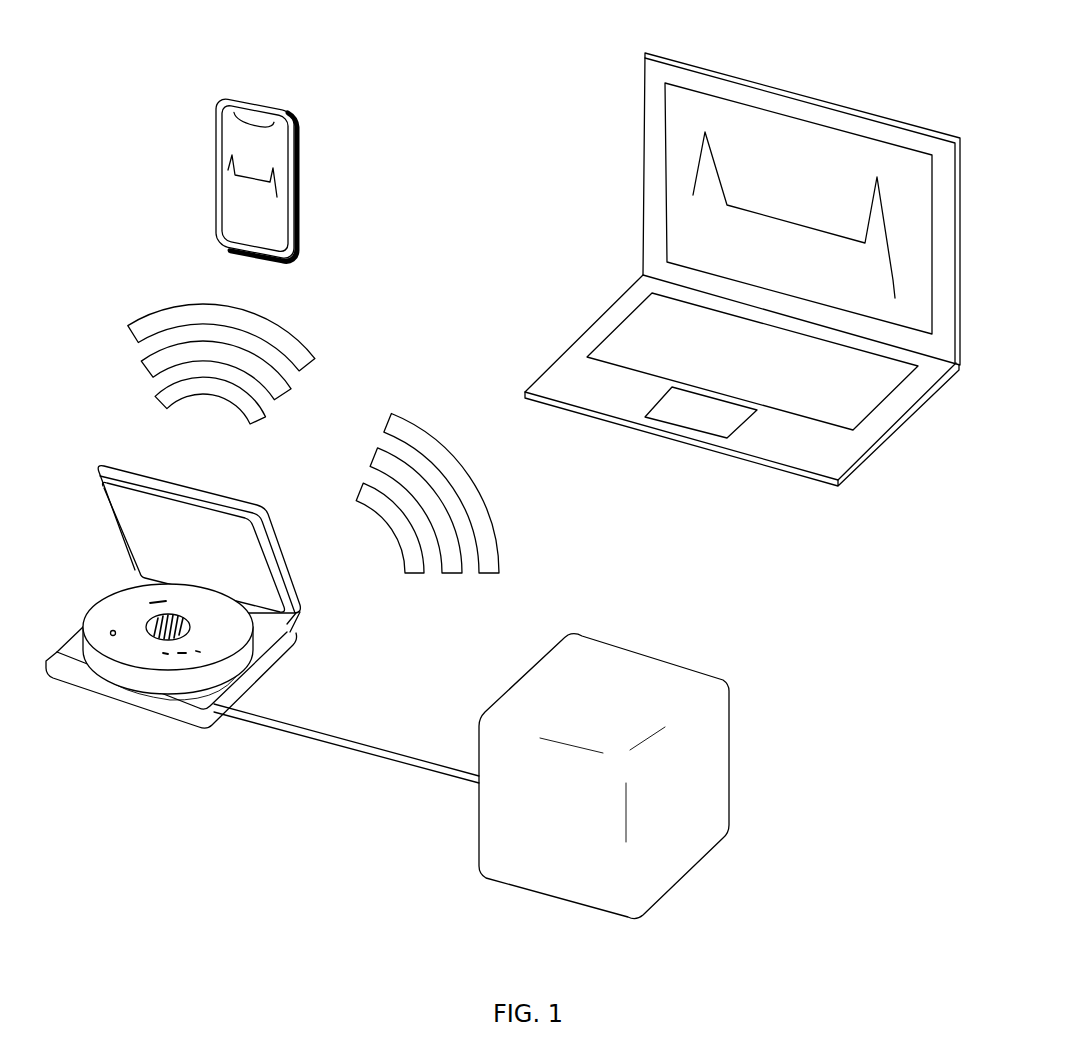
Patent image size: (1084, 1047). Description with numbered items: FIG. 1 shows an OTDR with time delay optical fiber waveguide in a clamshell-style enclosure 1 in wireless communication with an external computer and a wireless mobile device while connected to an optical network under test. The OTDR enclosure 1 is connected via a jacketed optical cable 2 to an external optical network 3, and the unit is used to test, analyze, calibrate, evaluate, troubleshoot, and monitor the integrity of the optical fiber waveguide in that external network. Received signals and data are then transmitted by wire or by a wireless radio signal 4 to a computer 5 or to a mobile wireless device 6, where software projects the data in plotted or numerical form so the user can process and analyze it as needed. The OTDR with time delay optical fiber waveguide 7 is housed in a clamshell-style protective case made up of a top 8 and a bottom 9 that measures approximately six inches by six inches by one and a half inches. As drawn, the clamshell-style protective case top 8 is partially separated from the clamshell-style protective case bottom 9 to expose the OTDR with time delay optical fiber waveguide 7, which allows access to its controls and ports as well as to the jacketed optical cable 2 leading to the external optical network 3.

The OTDR with time delay optical fiber waveguide in clamshell-style enclosure 1 is at (81, 518).
The jacketed optical cable 2 is at (321, 747).
The external optical network 3 is at (731, 755).
The wireless radio signal 4 is at (276, 381).
The computer 5 is at (898, 441).
The mobile wireless device 6 is at (297, 197).
The OTDR with time delay optical fiber waveguide 7 is at (90, 605).
The clamshell-style protective case (top) 8 is at (305, 600).
The clamshell-style protective case (bottom) 9 is at (271, 671).